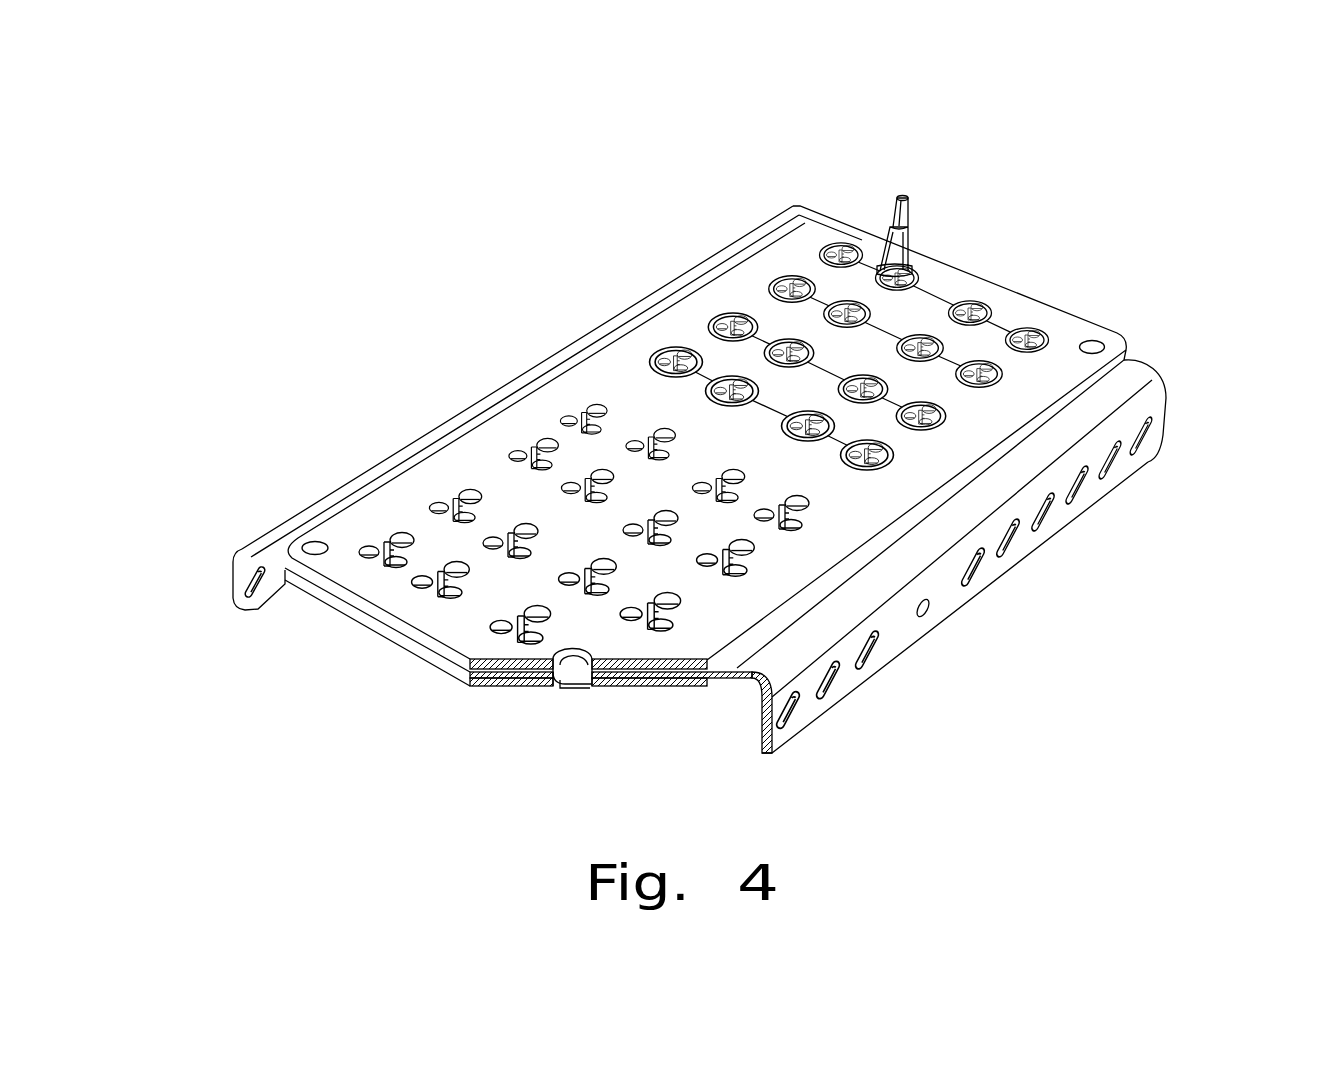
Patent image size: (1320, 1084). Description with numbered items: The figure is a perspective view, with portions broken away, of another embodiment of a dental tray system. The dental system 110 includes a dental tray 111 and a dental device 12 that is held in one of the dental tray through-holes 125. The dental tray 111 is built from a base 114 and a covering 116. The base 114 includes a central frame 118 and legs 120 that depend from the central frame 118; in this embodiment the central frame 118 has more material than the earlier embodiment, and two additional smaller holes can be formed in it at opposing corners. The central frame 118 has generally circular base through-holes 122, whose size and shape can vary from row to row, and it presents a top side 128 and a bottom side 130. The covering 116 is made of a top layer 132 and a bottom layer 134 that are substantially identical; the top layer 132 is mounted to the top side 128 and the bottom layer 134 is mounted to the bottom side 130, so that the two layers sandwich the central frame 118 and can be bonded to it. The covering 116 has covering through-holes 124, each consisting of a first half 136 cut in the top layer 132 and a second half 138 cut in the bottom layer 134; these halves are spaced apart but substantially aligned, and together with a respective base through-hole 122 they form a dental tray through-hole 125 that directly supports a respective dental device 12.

The dental system 110 is at (497, 187).
The dental device 12 is at (907, 235).
The dental tray 111 is at (260, 472).
The base 114 is at (1167, 365).
The covering 116 is at (366, 512).
The central frame 118 is at (1130, 358).
The legs 120 is at (1088, 487).
The base through-holes 122 is at (600, 690).
The covering through-holes 124 is at (520, 712).
The dental tray through-holes 125 is at (510, 443).
The top side 128 is at (734, 657).
The bottom side 130 is at (722, 677).
The top layer 132 is at (347, 603).
The bottom layer 134 is at (370, 624).
The first half 136 is at (573, 672).
The second half 138 is at (590, 690).